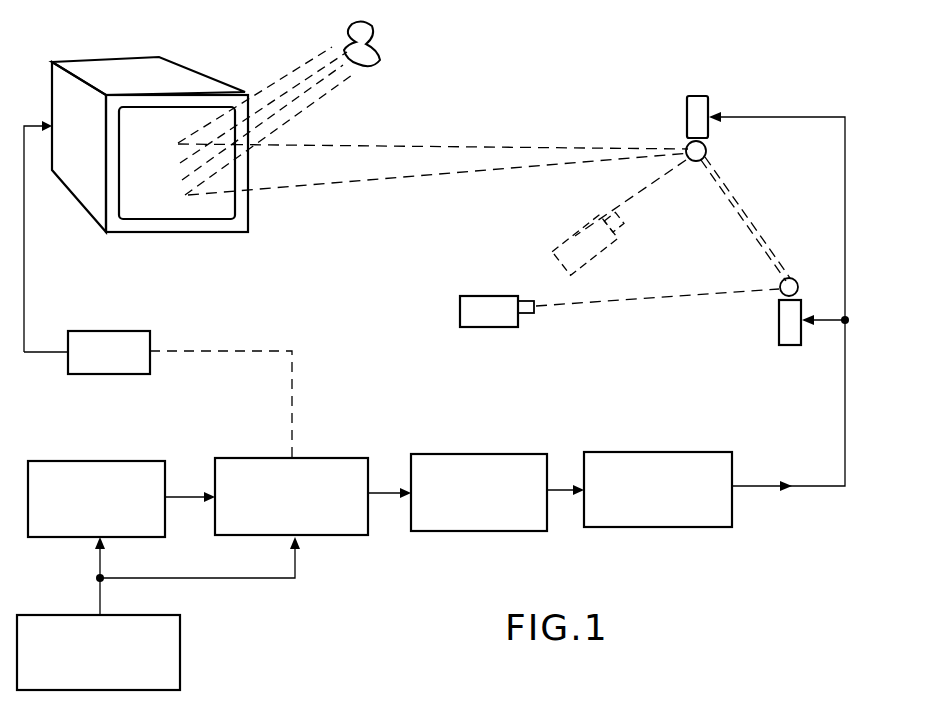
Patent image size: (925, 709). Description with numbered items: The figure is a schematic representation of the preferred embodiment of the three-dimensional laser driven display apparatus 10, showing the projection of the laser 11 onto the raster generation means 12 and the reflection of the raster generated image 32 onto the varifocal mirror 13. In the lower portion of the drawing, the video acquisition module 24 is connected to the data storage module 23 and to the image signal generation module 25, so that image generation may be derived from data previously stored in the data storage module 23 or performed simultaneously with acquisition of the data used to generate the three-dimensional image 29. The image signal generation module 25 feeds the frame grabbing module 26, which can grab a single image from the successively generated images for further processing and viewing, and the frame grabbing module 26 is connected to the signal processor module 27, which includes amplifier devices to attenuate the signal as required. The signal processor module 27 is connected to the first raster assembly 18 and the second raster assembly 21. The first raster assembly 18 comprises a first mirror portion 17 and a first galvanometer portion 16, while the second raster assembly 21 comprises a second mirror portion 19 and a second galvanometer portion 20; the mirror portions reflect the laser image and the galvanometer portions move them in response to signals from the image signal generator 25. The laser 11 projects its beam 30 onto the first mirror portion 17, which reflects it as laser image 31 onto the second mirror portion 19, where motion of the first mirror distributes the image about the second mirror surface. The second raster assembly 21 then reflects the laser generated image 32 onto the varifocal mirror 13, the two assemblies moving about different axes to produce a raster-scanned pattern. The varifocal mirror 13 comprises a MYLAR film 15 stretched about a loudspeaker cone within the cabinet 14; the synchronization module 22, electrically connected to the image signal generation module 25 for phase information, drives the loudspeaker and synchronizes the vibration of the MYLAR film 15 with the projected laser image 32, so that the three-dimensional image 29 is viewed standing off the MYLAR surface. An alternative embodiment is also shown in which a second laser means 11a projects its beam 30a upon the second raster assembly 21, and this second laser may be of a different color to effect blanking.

The three-dimensional laser driven display apparatus 10 is at (512, 82).
The laser 11 is at (494, 338).
The second laser means 11a is at (582, 272).
The raster generation means 12 is at (726, 131).
The varifocal mirror 13 is at (222, 64).
The cabinet 14 is at (90, 65).
The MYLAR film 15 is at (152, 207).
The first galvanometer portion 16 is at (792, 336).
The first mirror portion 17 is at (800, 280).
The first raster assembly 18 is at (768, 330).
The second mirror portion 19 is at (693, 163).
The second galvanometer portion 20 is at (700, 108).
The second raster assembly 21 is at (676, 114).
The synchronization module 22 is at (126, 366).
The data storage module 23 is at (113, 460).
The video acquisition module 24 is at (182, 633).
The image signal generation module 25 is at (330, 456).
The frame grabbing module 26 is at (464, 454).
The signal processor module 27 is at (650, 452).
The three-dimensional image 29 is at (384, 36).
The beam 30 is at (676, 308).
The beam of second laser means 30a is at (660, 194).
The laser image 31 is at (744, 244).
The laser generated image 32 is at (608, 166).